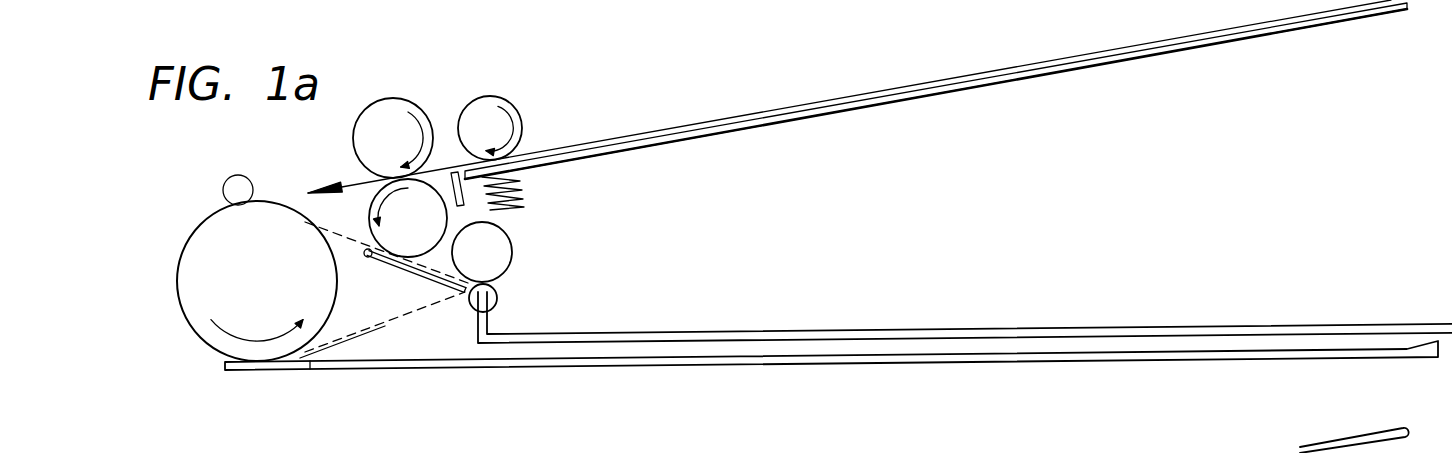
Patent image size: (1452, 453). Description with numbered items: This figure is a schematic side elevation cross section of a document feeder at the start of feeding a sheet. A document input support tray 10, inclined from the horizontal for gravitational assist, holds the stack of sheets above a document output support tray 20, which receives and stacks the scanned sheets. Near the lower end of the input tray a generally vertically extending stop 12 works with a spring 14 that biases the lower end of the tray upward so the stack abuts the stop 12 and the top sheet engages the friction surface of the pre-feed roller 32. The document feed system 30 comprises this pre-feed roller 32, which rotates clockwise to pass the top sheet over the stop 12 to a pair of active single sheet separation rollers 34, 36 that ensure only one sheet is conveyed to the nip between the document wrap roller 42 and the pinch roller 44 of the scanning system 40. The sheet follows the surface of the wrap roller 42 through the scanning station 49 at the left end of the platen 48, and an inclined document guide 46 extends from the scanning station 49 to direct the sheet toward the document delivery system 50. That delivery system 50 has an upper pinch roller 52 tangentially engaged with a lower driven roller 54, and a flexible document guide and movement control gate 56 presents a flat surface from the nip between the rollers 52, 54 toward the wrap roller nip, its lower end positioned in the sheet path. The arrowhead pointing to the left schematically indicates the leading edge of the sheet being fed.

The document input support tray 10 is at (1020, 82).
The stop 12 is at (455, 170).
The spring 14 is at (522, 185).
The document output support tray 20 is at (1065, 326).
The document feed system 30 is at (592, 128).
The pre-feed roller 32 is at (516, 108).
The active single sheet separation roller 34 is at (400, 98).
The active single sheet separation roller 36 is at (369, 217).
The scanning system 40 is at (284, 390).
The document wrap roller 42 is at (191, 235).
The pinch roller 44 is at (230, 177).
The inclined document guide 46 is at (345, 352).
The platen 48 is at (1062, 370).
The scanning station 49 is at (250, 371).
The document delivery system 50 is at (678, 254).
The upper pinch roller 52 is at (508, 236).
The lower driven roller 54 is at (497, 300).
The document guide and movement control gate 56 is at (386, 264).